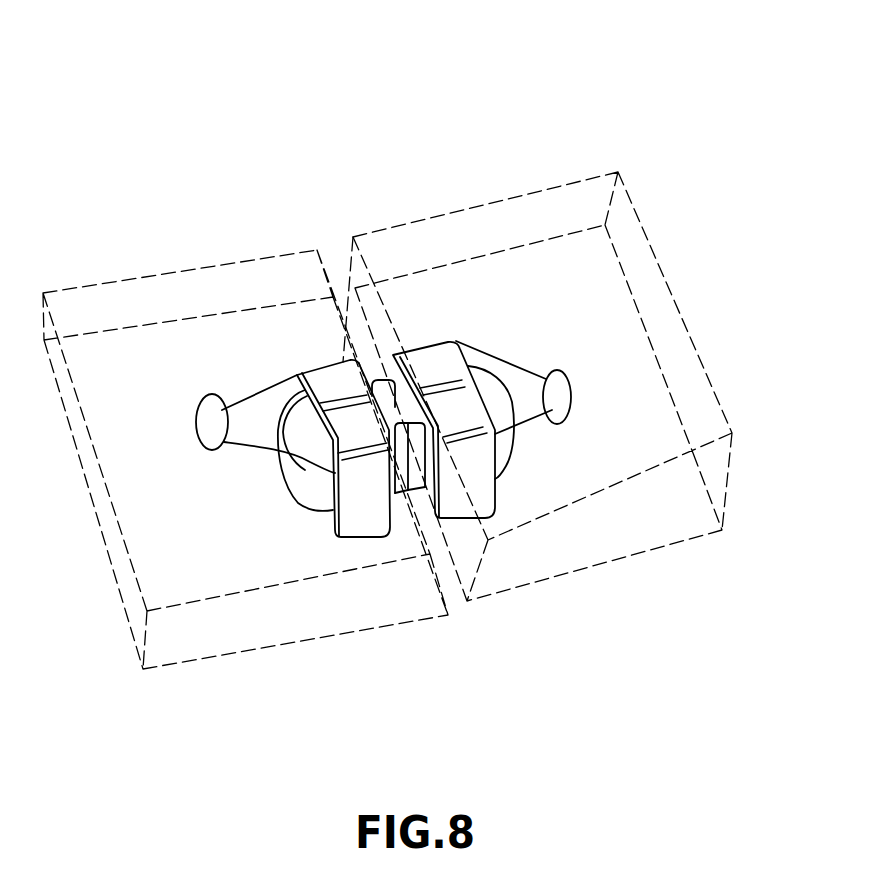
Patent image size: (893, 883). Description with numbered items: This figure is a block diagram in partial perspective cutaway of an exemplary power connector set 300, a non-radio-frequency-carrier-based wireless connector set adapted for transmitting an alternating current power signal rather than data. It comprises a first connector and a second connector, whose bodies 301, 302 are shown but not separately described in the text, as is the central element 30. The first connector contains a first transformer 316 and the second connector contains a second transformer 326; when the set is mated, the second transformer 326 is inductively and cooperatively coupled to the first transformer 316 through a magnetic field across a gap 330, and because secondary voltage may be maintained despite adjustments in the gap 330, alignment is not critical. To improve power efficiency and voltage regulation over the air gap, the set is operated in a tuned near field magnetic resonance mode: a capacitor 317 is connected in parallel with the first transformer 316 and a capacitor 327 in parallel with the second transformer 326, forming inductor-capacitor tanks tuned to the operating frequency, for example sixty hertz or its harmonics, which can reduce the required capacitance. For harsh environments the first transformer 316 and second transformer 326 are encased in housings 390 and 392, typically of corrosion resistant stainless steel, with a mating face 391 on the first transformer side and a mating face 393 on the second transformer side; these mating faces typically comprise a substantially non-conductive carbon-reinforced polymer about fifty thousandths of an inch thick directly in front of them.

The connector assembly 300 is at (243, 115).
The first connector housing 301 is at (297, 374).
The second connector housing 302 is at (510, 492).
The first transformer 316 is at (303, 530).
The capacitor 317 is at (197, 403).
The second transformer 326 is at (457, 340).
The capacitor 327 is at (571, 396).
The gap 330 is at (410, 452).
The mating interface 30 is at (412, 508).
The housing 390 is at (235, 607).
The mating face 391 is at (370, 350).
The housing 392 is at (652, 522).
The mating face 393 is at (408, 493).